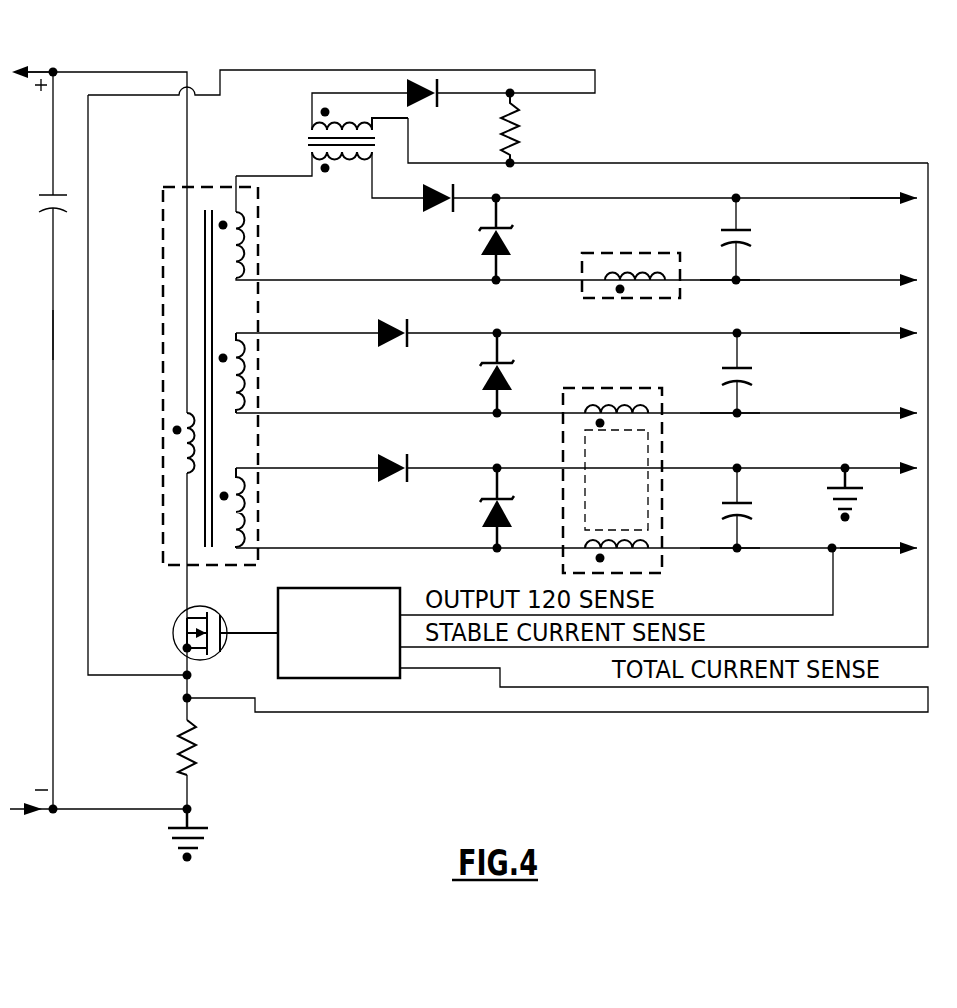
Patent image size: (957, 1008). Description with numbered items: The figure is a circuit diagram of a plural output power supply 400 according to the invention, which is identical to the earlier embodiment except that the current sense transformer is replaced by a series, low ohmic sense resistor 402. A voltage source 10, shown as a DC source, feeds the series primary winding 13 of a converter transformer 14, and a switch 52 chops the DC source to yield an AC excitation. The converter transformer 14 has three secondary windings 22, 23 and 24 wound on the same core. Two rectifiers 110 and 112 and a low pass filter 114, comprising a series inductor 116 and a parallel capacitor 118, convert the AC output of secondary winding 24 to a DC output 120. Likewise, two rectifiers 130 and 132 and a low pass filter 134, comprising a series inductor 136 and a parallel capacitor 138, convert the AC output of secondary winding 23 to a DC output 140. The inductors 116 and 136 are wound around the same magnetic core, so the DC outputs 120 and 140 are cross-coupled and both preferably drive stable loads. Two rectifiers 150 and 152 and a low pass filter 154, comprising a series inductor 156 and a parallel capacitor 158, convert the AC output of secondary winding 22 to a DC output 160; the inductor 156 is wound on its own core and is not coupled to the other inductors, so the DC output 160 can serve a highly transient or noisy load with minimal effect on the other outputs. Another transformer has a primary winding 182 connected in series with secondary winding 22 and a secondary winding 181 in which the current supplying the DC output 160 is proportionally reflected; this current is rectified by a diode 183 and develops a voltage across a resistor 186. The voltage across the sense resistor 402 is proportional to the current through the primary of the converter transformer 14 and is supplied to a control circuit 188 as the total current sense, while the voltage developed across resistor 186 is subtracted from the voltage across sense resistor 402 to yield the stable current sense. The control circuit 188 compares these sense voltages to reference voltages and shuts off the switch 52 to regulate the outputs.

The voltage source 10 is at (24, 70).
The plural output power supply 400 is at (45, 329).
The converter transformer 14 is at (156, 284).
The primary winding 13 is at (187, 470).
The secondary winding 22 is at (250, 226).
The secondary winding 23 is at (250, 356).
The secondary winding 24 is at (250, 496).
The switch 52 is at (183, 615).
The sense resistor 402 is at (198, 768).
The control circuit 188 is at (362, 588).
The rectifier 150 is at (295, 136).
The secondary winding 181 is at (314, 128).
The primary winding 182 is at (312, 158).
The diode 183 is at (410, 102).
The resistor 186 is at (520, 125).
The rectifier 152 is at (482, 250).
The series inductor 156 is at (622, 265).
The parallel capacitor 158 is at (728, 232).
The DC output 160 is at (895, 205).
The low pass filter 154 is at (754, 288).
The rectifier 130 is at (380, 340).
The rectifier 132 is at (483, 385).
The series inductor 136 is at (603, 398).
The parallel capacitor 138 is at (728, 368).
The DC output 140 is at (835, 340).
The low pass filter 134 is at (756, 424).
The rectifier 110 is at (380, 475).
The rectifier 112 is at (483, 520).
The series inductor 116 is at (646, 546).
The parallel capacitor 118 is at (730, 503).
The low pass filter 114 is at (756, 560).
The DC output 120 is at (850, 550).